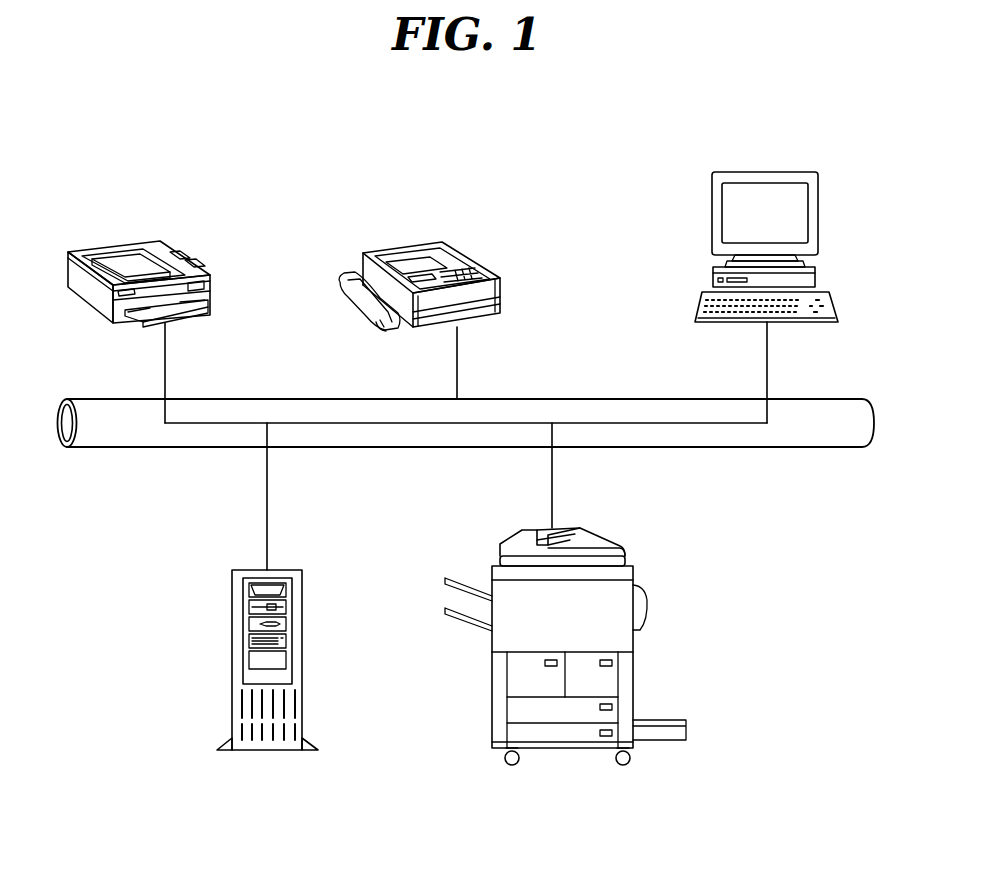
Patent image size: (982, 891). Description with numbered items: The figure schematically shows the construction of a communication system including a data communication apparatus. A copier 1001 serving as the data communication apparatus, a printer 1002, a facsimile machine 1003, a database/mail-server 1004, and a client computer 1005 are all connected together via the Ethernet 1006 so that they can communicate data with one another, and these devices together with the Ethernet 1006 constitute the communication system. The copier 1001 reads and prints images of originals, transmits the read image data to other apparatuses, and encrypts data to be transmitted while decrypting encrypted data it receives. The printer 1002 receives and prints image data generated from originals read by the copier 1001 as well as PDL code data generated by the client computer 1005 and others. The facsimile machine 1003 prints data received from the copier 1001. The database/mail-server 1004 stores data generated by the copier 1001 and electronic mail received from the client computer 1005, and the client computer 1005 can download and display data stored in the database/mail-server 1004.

The copier 1001 is at (632, 522).
The printer 1002 is at (112, 243).
The facsimile machine 1003 is at (403, 243).
The database/mail-server 1004 is at (288, 570).
The client computer 1005 is at (795, 147).
The Ethernet 1006 is at (712, 447).